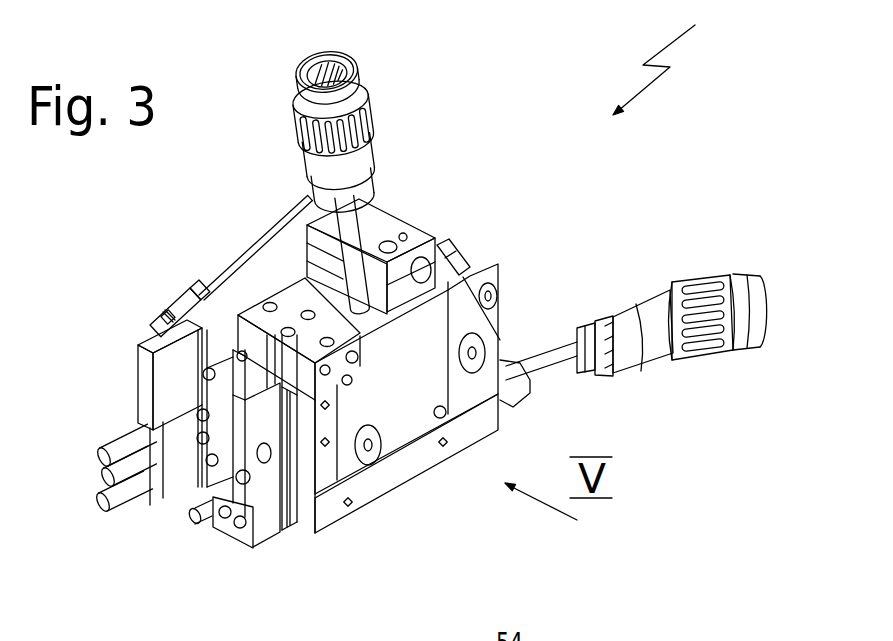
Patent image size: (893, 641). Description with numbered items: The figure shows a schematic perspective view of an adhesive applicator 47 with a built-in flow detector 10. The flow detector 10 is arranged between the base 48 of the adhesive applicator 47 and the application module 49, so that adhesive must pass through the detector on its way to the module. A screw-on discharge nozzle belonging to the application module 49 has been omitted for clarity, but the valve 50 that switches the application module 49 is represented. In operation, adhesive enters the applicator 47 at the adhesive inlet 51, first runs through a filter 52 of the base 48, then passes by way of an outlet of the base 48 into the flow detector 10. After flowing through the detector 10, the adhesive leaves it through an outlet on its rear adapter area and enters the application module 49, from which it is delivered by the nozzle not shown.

The flow detector 10 is at (293, 531).
The adhesive applicator 47 is at (675, 64).
The base 48 is at (400, 470).
The application module 49 is at (263, 527).
The valve 50 is at (147, 380).
The adhesive inlet 51 is at (500, 290).
The filter 52 is at (459, 240).